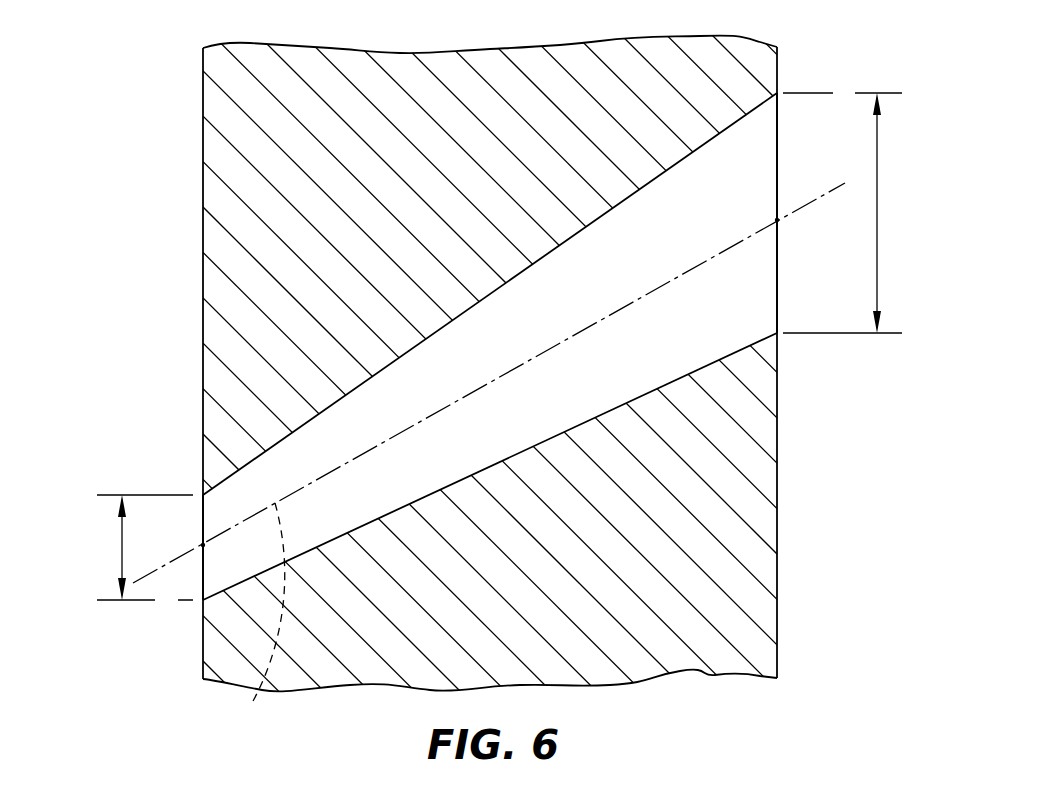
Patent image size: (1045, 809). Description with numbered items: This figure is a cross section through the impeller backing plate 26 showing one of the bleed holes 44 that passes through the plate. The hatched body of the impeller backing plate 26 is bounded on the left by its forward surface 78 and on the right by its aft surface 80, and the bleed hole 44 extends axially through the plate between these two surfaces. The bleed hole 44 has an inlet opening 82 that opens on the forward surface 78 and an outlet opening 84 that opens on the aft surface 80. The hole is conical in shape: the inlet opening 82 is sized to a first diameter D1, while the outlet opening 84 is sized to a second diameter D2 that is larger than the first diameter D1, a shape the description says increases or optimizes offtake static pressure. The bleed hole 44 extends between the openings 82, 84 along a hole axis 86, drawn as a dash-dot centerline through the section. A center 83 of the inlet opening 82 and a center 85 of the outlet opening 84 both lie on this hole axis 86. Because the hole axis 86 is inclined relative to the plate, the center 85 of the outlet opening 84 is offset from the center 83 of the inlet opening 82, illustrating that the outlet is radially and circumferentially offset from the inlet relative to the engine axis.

The impeller backing plate 26 is at (124, 198).
The bleed hole 44 is at (258, 433).
The forward surface 78 is at (203, 363).
The aft surface 80 is at (777, 483).
The inlet opening 82 is at (188, 581).
The center of the inlet opening 83 is at (203, 545).
The outlet opening 84 is at (796, 142).
The center of the outlet opening 85 is at (777, 220).
The hole axis 86 is at (261, 622).
The first diameter D1 is at (122, 553).
The second diameter D2 is at (877, 220).